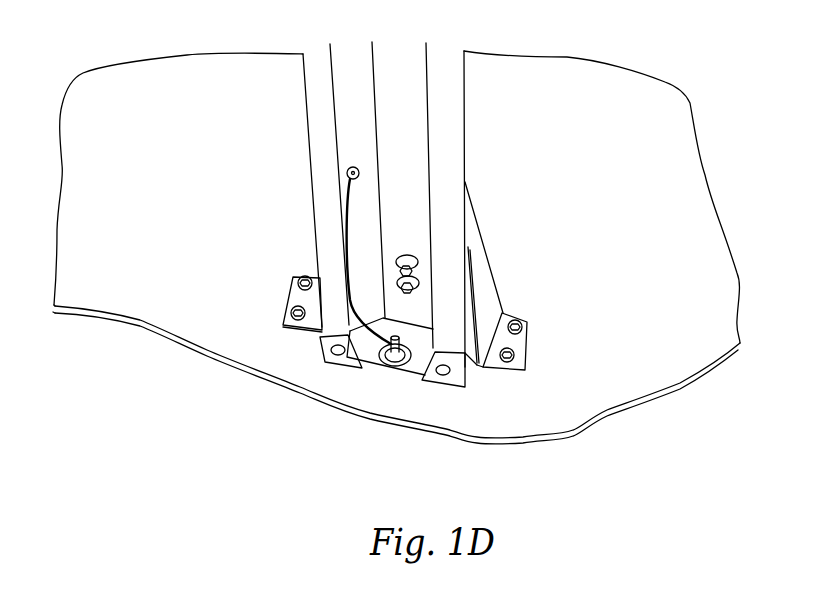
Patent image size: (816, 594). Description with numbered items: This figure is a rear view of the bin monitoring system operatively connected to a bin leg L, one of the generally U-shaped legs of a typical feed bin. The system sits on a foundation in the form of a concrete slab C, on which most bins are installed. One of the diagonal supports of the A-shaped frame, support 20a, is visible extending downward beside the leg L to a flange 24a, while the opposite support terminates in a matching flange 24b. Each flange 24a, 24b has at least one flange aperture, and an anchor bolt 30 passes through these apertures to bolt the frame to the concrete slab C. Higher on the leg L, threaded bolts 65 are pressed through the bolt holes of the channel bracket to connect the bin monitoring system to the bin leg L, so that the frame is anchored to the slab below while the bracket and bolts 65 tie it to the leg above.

The concrete slab C is at (236, 254).
The bin leg L is at (464, 117).
The support 20a is at (488, 248).
The threaded bolt 65 is at (404, 256).
The anchor bolt 30 is at (288, 308).
The flange 24a is at (517, 375).
The flange 24b is at (287, 333).